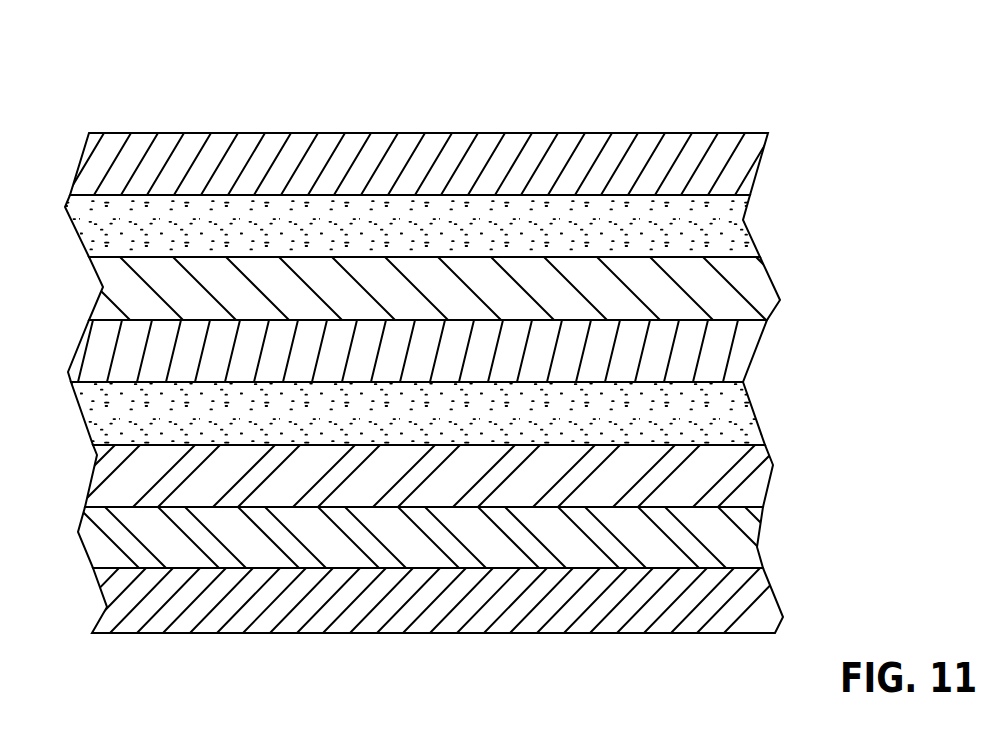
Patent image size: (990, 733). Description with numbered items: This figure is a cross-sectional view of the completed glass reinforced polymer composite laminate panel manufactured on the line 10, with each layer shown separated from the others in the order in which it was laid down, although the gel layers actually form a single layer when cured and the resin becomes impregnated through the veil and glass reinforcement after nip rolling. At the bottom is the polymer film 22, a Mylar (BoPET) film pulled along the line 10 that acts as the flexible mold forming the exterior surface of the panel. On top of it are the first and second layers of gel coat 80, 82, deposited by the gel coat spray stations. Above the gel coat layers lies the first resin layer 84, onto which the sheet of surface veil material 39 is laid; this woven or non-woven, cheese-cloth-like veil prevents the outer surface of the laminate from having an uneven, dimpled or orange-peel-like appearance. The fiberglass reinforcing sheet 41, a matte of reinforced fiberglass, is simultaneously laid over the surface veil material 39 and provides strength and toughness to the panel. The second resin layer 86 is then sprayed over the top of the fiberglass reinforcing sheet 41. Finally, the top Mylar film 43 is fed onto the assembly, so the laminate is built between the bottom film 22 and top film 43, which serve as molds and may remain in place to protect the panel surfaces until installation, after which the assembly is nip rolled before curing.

The line 10 is at (458, 332).
The top Mylar film 43 is at (750, 165).
The second resin layer 86 is at (740, 237).
The fiberglass reinforcing sheet 41 is at (768, 290).
The surface veil material 39 is at (748, 343).
The first resin layer 84 is at (750, 417).
The second layer of gel coat 82 is at (755, 480).
The first layer of gel coat 80 is at (748, 528).
The polymer film 22 is at (768, 600).